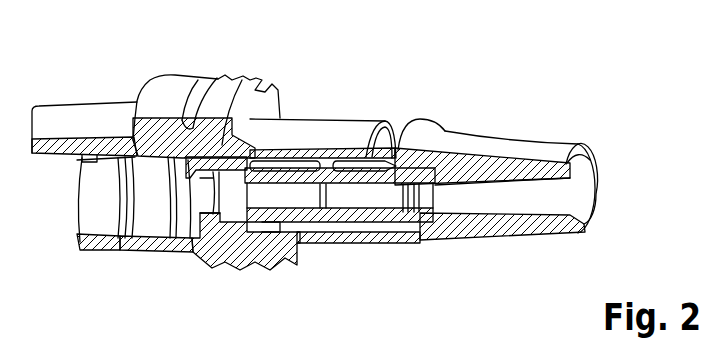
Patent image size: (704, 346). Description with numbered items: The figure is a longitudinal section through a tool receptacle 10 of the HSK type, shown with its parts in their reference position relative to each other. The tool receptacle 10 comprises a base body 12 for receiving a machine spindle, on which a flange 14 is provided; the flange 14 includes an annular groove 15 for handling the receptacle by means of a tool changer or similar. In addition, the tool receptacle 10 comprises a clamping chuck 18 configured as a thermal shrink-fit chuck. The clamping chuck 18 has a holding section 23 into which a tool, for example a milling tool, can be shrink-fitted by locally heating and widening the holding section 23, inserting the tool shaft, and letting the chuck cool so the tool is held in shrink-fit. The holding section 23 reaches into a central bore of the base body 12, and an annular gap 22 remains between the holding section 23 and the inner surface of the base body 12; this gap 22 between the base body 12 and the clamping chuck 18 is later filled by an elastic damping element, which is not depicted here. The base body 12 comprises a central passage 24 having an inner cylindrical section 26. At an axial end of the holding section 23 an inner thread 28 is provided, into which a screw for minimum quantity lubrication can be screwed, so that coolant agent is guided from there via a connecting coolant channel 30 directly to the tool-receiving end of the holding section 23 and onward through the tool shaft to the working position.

The tool receptacle 10 is at (533, 118).
The base body 12 is at (97, 97).
The flange 14 is at (172, 88).
The annular groove 15 is at (207, 92).
The clamping chuck 18 is at (483, 247).
The gap 22 is at (410, 240).
The holding section 23 is at (295, 177).
The central passage 24 is at (146, 215).
The inner cylindrical section 26 is at (98, 213).
The inner thread 28 is at (233, 233).
The coolant channel 30 is at (353, 198).